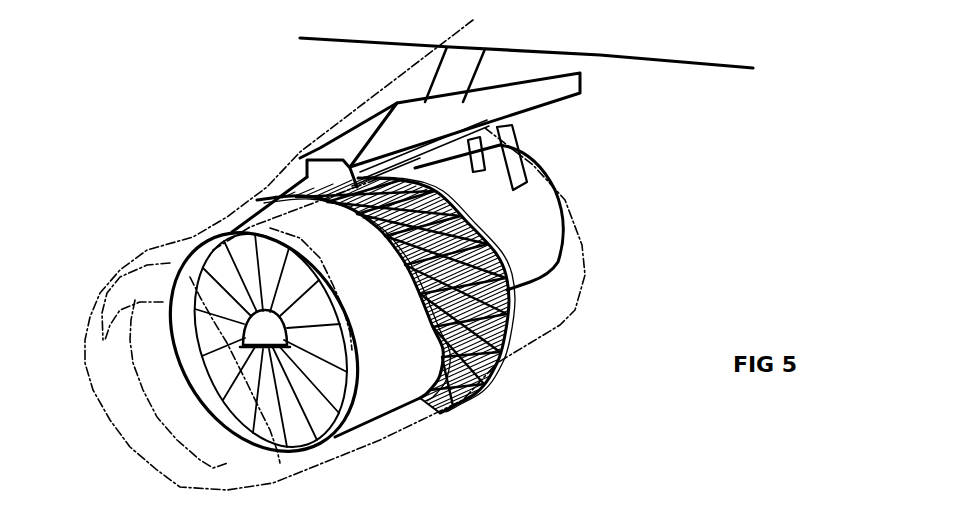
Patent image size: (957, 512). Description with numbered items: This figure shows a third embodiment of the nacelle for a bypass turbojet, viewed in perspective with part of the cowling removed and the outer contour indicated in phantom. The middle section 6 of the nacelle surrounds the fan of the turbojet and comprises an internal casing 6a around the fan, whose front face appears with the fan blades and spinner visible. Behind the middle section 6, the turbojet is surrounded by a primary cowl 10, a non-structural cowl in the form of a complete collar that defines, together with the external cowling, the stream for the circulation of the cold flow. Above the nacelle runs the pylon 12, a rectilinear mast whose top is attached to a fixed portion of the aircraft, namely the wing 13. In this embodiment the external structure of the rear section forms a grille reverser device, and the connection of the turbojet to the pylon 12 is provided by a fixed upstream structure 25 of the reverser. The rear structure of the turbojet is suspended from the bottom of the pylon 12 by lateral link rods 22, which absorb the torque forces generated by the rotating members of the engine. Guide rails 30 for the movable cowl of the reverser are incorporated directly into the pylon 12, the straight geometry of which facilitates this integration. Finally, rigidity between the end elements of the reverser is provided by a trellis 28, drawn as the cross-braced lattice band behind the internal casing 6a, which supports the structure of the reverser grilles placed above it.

The middle section 6 is at (452, 437).
The internal casing 6a is at (300, 224).
The primary cowl 10 is at (547, 273).
The pylon 12 is at (328, 144).
The wing 13 is at (670, 62).
The lateral link rods 22 is at (530, 160).
The fixed upstream structure 25 is at (472, 398).
The trellis 28 is at (497, 292).
The guide rails 30 is at (413, 143).